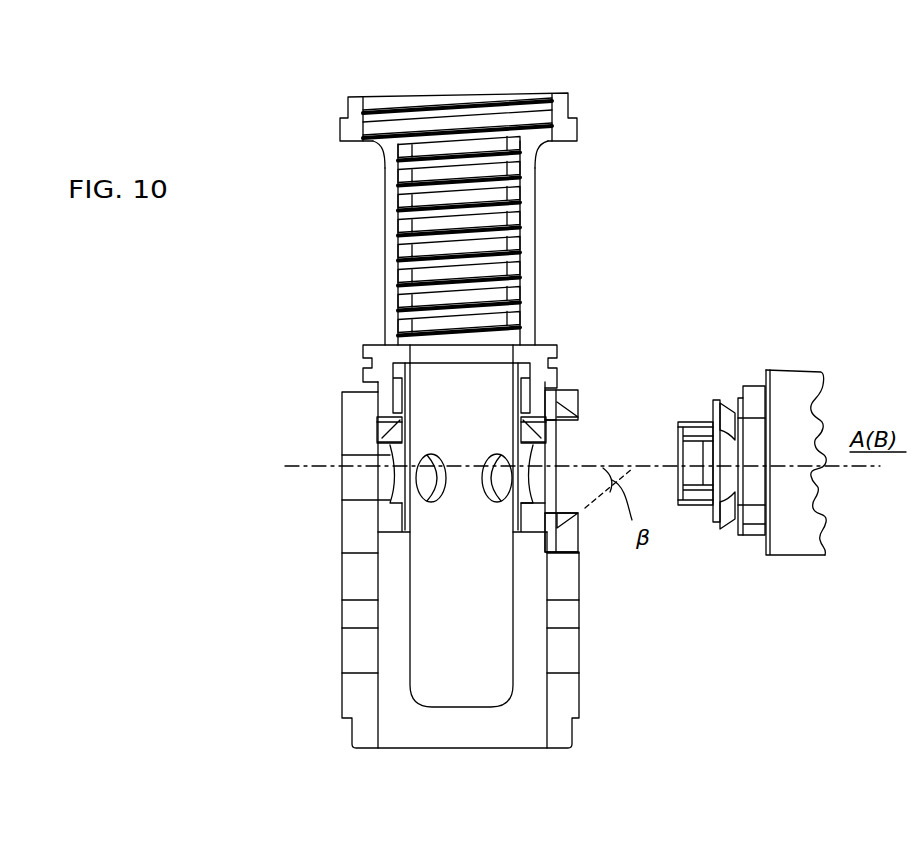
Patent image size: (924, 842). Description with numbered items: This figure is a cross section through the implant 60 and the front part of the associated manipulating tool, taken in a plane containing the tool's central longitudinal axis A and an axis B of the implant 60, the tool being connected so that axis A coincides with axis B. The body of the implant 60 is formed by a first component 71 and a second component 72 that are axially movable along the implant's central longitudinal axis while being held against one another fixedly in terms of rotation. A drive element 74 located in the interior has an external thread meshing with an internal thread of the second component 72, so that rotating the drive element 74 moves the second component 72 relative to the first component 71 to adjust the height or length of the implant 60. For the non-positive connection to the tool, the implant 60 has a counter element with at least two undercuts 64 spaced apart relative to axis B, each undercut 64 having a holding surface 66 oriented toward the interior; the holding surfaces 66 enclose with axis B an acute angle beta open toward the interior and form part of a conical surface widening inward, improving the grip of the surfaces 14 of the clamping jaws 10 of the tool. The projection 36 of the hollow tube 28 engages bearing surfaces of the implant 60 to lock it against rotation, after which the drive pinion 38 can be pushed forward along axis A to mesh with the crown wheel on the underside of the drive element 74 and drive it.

The clamping jaws 10 is at (714, 536).
The surfaces of the clamping jaws 14 is at (724, 400).
The hollow tube 28 is at (795, 560).
The projection 36 is at (750, 433).
The drive pinion 38 is at (690, 422).
The implant 60 is at (262, 752).
The undercuts 64 is at (564, 421).
The holding surfaces 66 is at (572, 393).
The first component 71 is at (605, 762).
The second component 72 is at (590, 82).
The drive element 74 is at (540, 352).